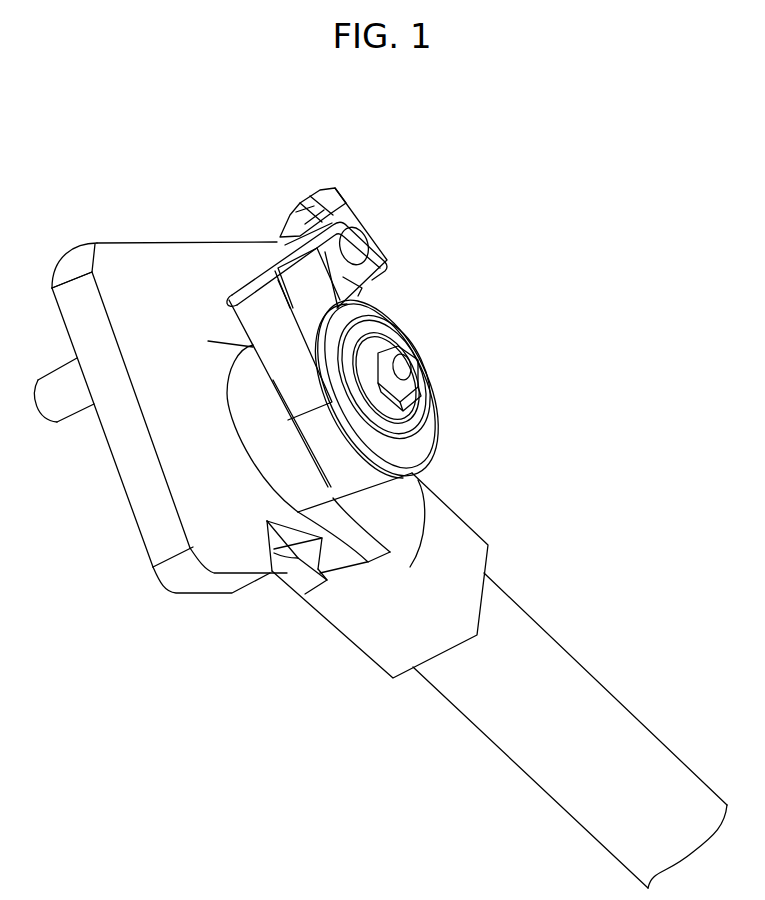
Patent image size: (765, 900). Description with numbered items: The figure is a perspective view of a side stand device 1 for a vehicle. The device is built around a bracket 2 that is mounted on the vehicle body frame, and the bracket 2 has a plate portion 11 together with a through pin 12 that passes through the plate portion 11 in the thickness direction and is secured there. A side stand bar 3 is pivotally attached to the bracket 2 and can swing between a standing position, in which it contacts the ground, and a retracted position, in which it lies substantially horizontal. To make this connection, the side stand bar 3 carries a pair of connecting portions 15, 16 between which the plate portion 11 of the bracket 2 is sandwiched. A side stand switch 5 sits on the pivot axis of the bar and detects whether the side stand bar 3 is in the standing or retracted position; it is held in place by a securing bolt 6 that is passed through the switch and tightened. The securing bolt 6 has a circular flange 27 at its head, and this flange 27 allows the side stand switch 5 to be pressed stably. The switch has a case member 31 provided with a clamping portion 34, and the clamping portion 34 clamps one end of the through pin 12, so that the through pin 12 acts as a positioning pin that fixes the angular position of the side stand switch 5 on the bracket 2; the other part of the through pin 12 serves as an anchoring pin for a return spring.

The side stand device 1 is at (497, 280).
The bracket 2 is at (90, 235).
The side stand bar 3 is at (610, 649).
The side stand switch 5 is at (396, 270).
The securing bolt 6 is at (423, 364).
The plate portion 11 is at (143, 262).
The through pin 12 is at (357, 245).
The connecting portion 15 is at (262, 441).
The connecting portion 16 is at (290, 576).
The circular flange 27 is at (375, 343).
The case member 31 is at (430, 437).
The clamping portion 34 is at (255, 288).